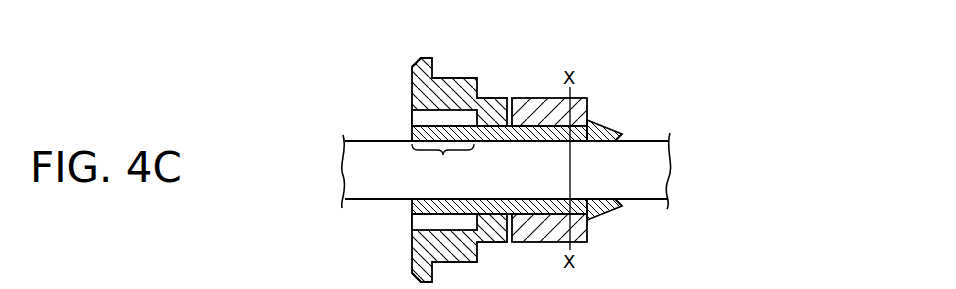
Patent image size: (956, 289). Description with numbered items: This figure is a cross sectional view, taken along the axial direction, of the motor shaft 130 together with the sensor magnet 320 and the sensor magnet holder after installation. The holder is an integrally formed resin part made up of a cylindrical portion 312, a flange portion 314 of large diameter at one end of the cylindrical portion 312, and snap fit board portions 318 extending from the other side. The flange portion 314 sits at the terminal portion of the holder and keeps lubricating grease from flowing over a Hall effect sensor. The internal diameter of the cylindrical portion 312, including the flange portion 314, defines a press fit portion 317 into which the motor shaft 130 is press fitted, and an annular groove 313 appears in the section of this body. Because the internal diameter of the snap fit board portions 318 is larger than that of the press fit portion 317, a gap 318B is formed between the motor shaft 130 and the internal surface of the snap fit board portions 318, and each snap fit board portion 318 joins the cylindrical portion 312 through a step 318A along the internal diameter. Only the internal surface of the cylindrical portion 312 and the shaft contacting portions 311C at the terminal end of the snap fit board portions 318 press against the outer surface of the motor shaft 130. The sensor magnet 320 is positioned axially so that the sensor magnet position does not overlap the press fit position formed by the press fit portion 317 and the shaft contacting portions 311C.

The motor shaft 130 is at (645, 176).
The shaft contacting portions 311C is at (611, 141).
The cylindrical portion 312 is at (468, 78).
The annular groove 313 is at (392, 117).
The flange portion 314 is at (425, 58).
The press fit portion 317 is at (443, 161).
The snap fit board portions 318 is at (695, 122).
The step 318A is at (477, 141).
The gap 318B is at (527, 130).
The sensor magnet 320 is at (582, 112).